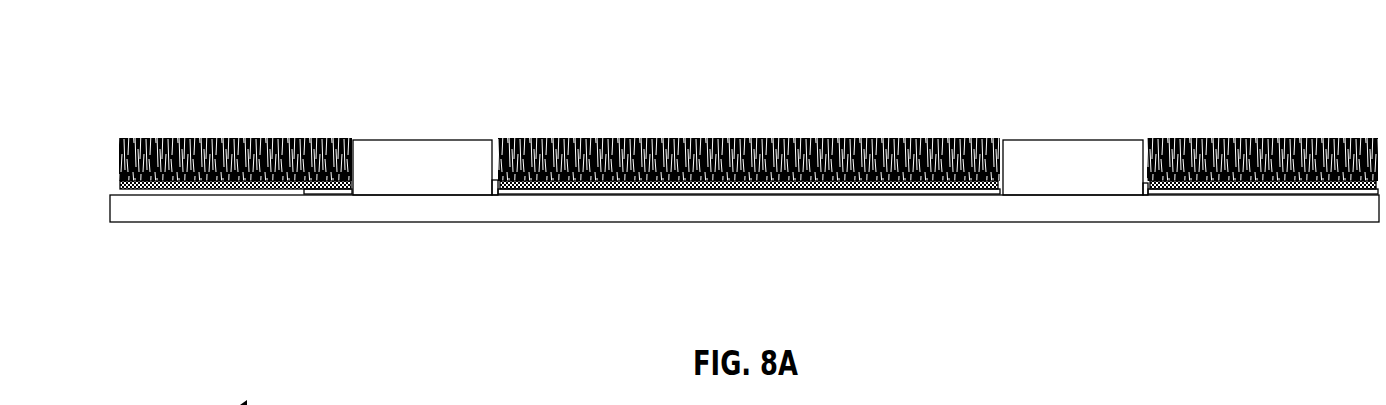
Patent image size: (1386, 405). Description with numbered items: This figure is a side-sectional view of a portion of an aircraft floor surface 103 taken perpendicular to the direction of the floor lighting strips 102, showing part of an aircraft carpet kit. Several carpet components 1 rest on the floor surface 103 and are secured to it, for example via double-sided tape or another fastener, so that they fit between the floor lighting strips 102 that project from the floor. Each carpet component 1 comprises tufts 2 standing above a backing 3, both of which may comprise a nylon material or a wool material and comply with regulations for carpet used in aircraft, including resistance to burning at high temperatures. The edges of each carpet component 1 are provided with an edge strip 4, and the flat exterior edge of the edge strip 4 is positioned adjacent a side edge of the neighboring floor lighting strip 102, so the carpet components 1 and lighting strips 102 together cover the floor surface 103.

The carpet component 1 is at (235, 166).
The tufts 2 is at (1260, 167).
The backing 3 is at (254, 185).
The edge strip 4 is at (1152, 197).
The floor lighting strip 102 is at (420, 155).
The floor surface 103 is at (490, 213).